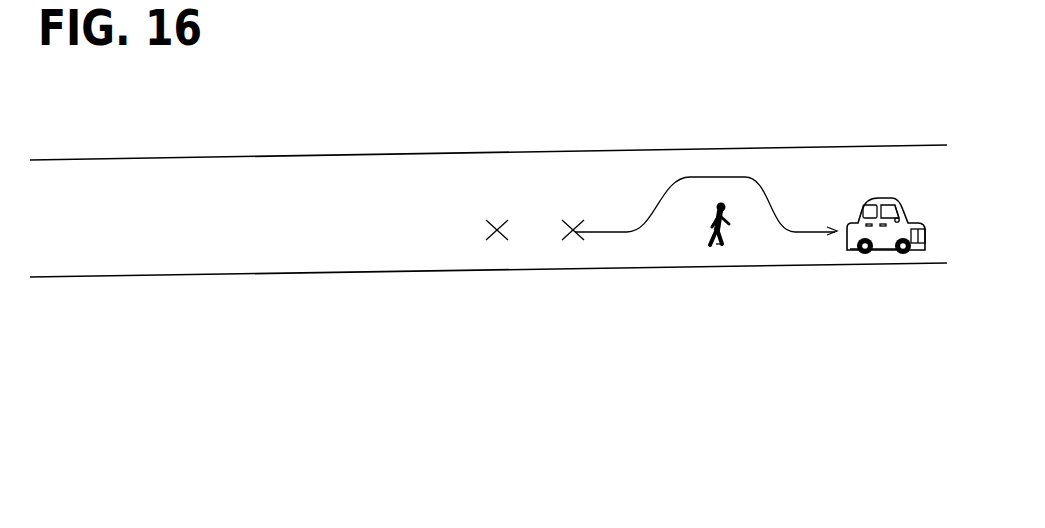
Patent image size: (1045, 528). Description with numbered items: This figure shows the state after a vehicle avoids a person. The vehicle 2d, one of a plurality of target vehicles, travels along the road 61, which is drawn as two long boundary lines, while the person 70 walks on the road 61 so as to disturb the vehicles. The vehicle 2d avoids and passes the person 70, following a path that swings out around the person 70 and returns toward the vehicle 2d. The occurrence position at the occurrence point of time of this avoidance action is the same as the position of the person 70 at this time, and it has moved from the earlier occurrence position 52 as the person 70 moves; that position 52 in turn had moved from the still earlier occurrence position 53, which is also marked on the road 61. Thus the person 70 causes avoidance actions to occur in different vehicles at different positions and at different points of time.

The vehicle 2d is at (882, 197).
The occurrence position 52 is at (573, 240).
The occurrence position 53 is at (497, 240).
The road 61 is at (923, 257).
The person 70 is at (718, 245).